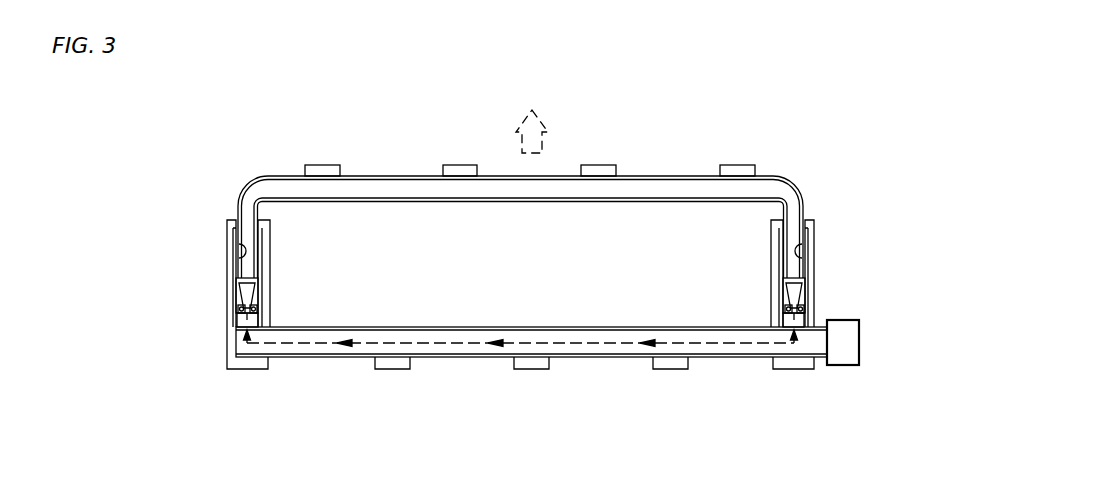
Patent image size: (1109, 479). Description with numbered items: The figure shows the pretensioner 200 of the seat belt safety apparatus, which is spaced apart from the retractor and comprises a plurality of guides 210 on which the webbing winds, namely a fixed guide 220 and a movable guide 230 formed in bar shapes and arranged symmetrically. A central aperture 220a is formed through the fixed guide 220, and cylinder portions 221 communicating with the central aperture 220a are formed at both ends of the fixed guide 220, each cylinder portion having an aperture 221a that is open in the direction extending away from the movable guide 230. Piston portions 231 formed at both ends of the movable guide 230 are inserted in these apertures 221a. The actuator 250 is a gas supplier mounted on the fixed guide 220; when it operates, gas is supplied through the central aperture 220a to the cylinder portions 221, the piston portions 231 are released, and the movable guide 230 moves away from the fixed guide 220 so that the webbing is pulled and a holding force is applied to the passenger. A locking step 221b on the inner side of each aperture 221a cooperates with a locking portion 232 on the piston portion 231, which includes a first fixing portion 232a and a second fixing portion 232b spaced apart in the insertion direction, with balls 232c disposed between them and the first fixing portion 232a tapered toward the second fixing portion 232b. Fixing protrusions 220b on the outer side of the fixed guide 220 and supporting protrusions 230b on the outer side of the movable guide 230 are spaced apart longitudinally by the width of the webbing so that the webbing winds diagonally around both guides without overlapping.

The pretensioner 200 is at (806, 180).
The guides 210 is at (519, 272).
The fixed guide 220 is at (730, 358).
The central aperture 220a is at (318, 345).
The fixing protrusions 220b is at (528, 364).
The cylinder portions 221 is at (810, 270).
The aperture 221a is at (238, 250).
The locking step 221b is at (232, 220).
The movable guide 230 is at (665, 176).
The supporting protrusions 230b is at (457, 170).
The piston portions 231 is at (796, 246).
The locking portion 232 is at (433, 331).
The first fixing portion 232a is at (244, 290).
The second fixing portion 232b is at (240, 312).
The balls 232c is at (242, 318).
The actuator 250 is at (856, 346).